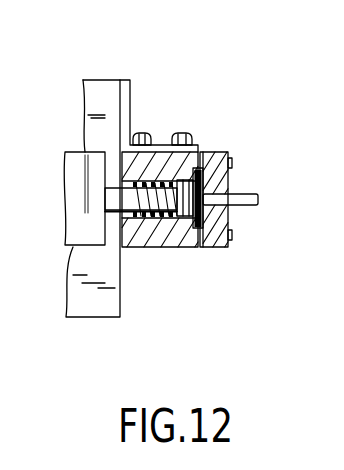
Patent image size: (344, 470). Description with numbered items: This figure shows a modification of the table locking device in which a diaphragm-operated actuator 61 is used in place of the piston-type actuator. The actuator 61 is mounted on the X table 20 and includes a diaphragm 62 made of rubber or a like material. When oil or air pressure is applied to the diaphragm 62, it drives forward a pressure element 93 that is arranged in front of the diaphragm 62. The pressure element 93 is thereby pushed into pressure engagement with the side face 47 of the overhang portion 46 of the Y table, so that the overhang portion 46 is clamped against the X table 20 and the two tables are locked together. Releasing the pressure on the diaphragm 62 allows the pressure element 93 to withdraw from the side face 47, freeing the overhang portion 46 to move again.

The X table 20 is at (113, 80).
The side face 47 is at (133, 136).
The overhang portion 46 is at (86, 152).
The diaphragm-operated actuator 61 is at (212, 153).
The diaphragm 62 is at (203, 193).
The pressure element 93 is at (112, 214).